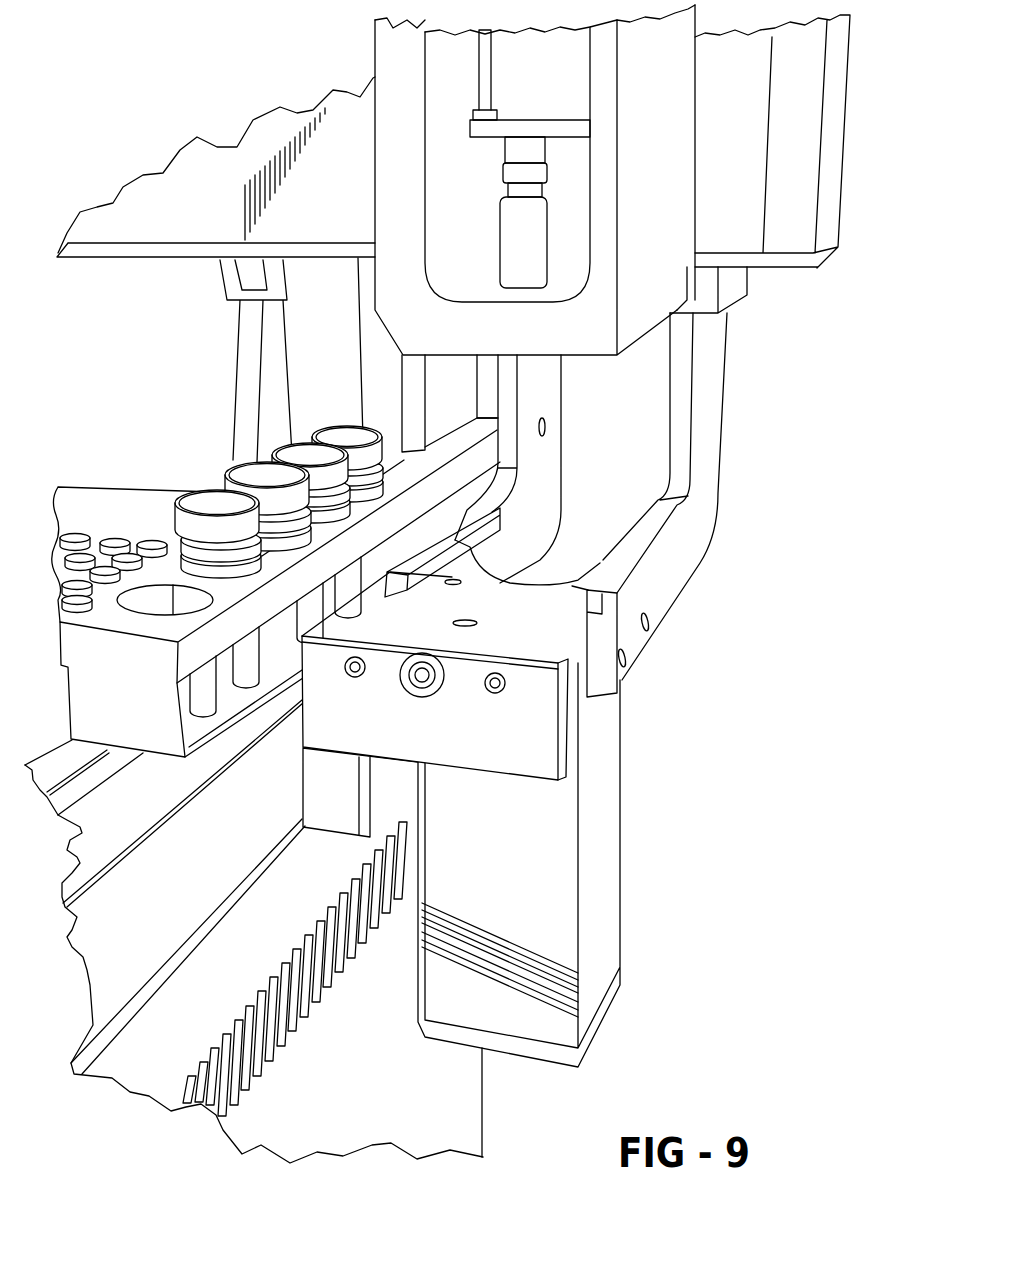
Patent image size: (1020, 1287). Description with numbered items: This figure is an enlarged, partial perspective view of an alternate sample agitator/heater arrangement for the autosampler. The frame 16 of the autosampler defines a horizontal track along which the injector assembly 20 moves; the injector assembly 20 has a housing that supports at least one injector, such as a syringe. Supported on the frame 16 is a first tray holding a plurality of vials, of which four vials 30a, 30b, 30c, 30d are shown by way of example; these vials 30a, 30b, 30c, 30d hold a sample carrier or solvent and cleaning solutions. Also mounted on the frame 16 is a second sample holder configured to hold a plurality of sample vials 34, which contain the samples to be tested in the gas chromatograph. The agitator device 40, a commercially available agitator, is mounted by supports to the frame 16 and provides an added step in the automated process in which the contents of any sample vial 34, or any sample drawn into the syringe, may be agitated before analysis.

The frame 16 is at (177, 205).
The injector assembly 20 is at (452, 128).
The vial 30a is at (345, 432).
The vial 30b is at (283, 450).
The vial 30c is at (243, 470).
The vial 30d is at (200, 500).
The sample vials 34 is at (151, 543).
The agitator device 40 is at (547, 890).